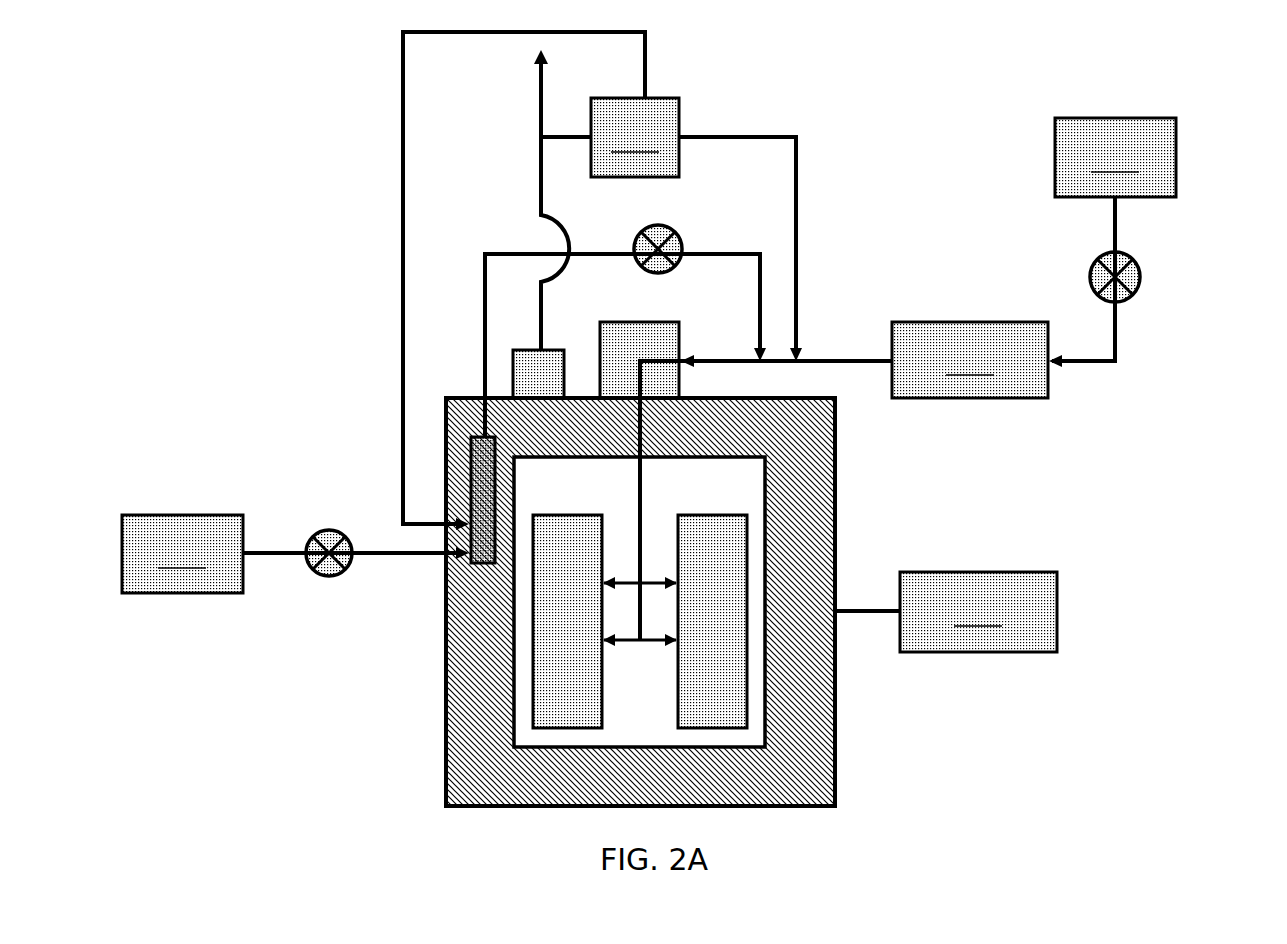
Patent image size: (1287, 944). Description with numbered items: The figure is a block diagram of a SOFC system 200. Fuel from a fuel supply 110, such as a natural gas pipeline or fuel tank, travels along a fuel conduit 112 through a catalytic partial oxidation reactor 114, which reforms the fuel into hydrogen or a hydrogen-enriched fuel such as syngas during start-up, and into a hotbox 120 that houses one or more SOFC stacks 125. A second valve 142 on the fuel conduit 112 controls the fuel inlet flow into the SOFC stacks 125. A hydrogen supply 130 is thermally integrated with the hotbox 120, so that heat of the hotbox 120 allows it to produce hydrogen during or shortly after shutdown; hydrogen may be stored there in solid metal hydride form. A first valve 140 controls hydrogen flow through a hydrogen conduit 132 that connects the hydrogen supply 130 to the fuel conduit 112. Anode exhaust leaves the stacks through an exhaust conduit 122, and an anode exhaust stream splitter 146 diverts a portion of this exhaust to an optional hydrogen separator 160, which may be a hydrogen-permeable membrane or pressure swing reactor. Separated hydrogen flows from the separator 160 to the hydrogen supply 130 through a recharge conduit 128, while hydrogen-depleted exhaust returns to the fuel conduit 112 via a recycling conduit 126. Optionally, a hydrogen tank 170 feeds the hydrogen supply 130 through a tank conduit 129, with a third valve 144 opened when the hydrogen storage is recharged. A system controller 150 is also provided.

The fuel supply 110 is at (1112, 242).
The fuel conduit 112 is at (833, 358).
The catalytic partial oxidation (CPDX) reactor 114 is at (970, 360).
The hotbox 120 is at (447, 602).
The exhaust conduit 122 is at (542, 185).
The SOFC stacks 125 is at (585, 643).
The recycling conduit 126 is at (801, 248).
The recharge conduit 128 is at (402, 90).
The tank conduit 129 is at (277, 557).
The hydrogen supply 130 is at (468, 498).
The hydrogen conduit 132 is at (485, 322).
The first valve 140 is at (678, 232).
The second valve 142 is at (1138, 272).
The third valve 144 is at (318, 525).
The anode exhaust stream splitter 146 is at (542, 137).
The system controller 150 is at (946, 612).
The hydrogen separator 160 is at (635, 137).
The hydrogen tank 170 is at (182, 554).
The SOFC system 200 is at (973, 752).